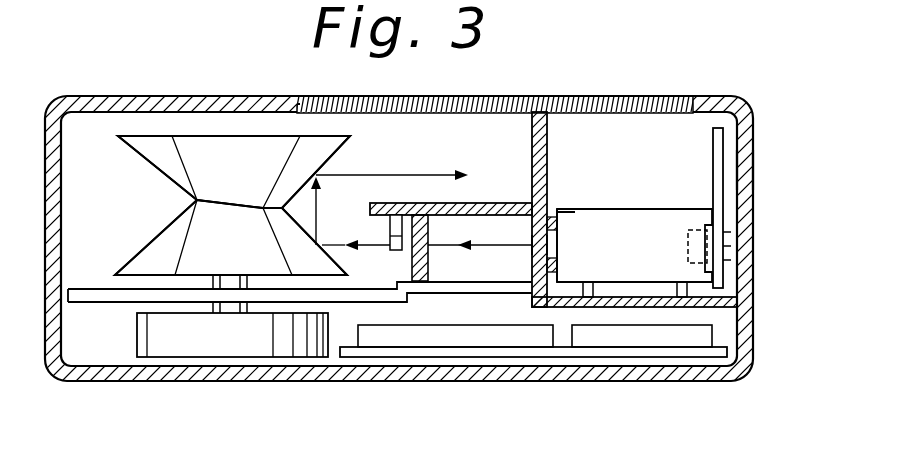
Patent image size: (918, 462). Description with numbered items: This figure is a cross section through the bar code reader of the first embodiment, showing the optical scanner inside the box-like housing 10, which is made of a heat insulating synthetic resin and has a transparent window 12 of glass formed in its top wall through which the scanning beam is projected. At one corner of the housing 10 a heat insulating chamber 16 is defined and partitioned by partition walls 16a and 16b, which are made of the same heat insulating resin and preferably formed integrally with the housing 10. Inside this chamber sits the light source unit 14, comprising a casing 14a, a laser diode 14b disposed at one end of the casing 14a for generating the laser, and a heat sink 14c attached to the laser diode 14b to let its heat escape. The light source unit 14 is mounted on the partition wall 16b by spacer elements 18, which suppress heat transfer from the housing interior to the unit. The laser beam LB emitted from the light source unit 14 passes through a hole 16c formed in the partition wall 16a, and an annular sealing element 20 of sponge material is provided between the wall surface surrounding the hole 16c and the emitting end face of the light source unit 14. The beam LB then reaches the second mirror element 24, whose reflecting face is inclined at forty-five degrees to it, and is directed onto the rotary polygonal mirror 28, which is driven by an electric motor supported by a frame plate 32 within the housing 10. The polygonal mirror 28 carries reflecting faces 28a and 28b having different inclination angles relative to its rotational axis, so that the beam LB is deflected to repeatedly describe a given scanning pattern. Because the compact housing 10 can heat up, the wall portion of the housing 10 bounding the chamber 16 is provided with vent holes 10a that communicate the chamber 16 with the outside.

The housing 10 is at (191, 92).
The vent holes 10a is at (748, 168).
The transparent window 12 is at (507, 97).
The light source unit 14 is at (666, 204).
The casing 14a is at (580, 208).
The laser diode 14b is at (688, 240).
The heat sink 14c is at (718, 196).
The heat insulating chamber 16 is at (599, 150).
The partition wall 16a is at (534, 150).
The partition wall 16b is at (673, 300).
The hole 16c is at (533, 243).
The spacer elements 18 is at (590, 282).
The annular sealing element 20 is at (546, 265).
The second mirror element 24 is at (400, 250).
The rotary polygonal mirror 28 is at (241, 238).
The reflecting faces 28a is at (140, 148).
The reflecting faces 28b is at (137, 263).
The frame plate 32 is at (103, 303).
The laser beam LB is at (428, 174).